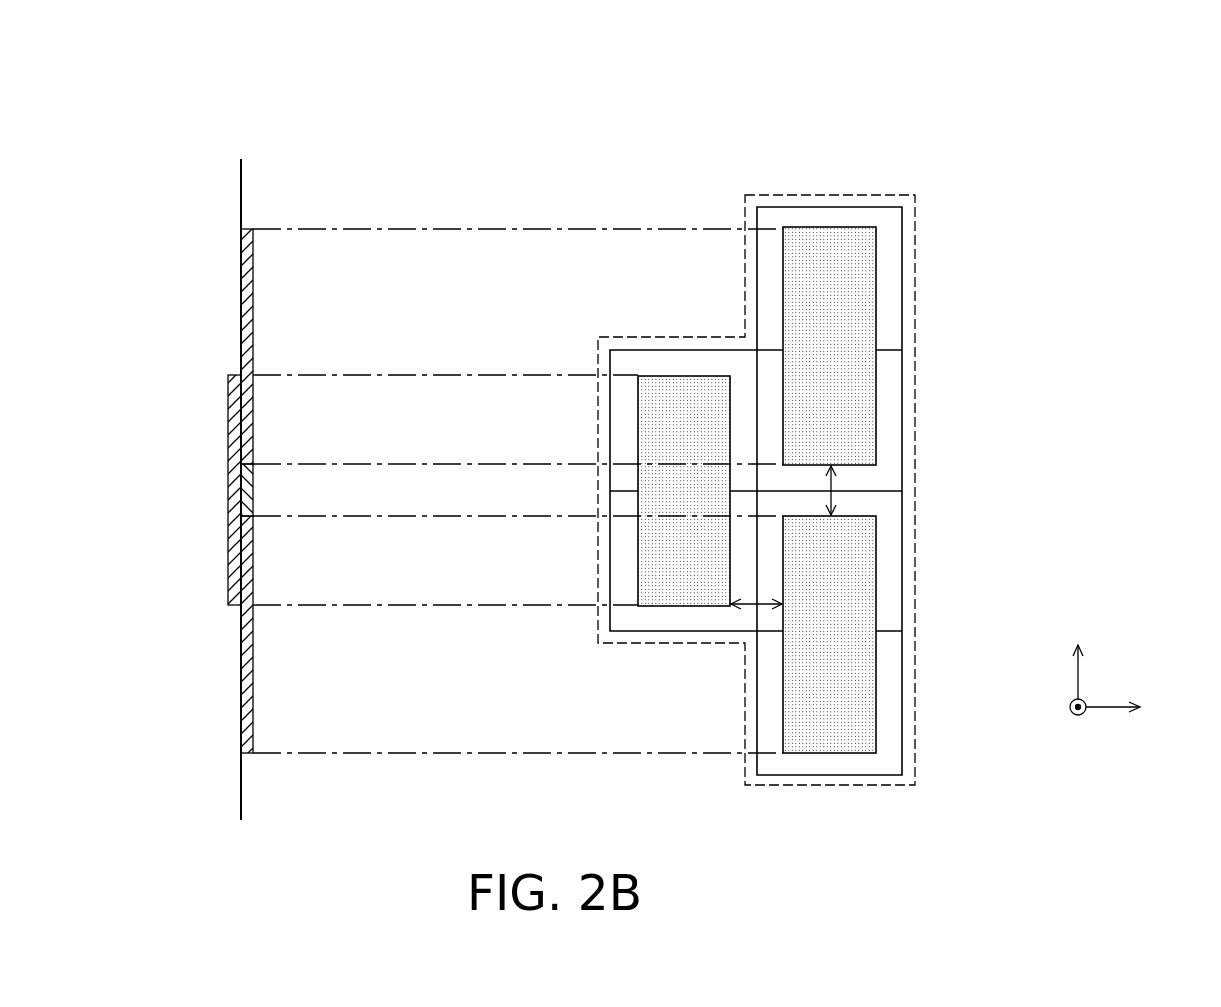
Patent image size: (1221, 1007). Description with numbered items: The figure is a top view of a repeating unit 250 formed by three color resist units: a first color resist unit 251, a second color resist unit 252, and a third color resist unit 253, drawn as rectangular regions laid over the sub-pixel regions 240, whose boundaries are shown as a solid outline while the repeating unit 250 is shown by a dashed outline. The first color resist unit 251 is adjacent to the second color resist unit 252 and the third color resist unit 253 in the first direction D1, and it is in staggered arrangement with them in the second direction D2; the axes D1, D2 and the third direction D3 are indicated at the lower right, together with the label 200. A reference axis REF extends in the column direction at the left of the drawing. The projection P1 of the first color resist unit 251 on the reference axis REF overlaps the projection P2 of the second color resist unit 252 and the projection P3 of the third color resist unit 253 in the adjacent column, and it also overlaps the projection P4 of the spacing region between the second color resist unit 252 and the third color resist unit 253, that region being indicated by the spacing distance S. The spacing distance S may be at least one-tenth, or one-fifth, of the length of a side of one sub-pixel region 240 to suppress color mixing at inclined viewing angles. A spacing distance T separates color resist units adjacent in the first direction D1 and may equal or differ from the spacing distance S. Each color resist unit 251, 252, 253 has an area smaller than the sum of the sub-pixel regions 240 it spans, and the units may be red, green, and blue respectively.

The reference axis REF is at (241, 190).
The projection of the first color resist unit P1 is at (228, 425).
The projection of the second color resist unit P2 is at (253, 310).
The projection of the third color resist unit P3 is at (253, 675).
The projection of the spacing region P4 is at (253, 490).
The sub-pixel region 240 is at (877, 207).
The repeating unit 250 is at (800, 193).
The first color resist unit 251 is at (610, 410).
The second color resist unit 252 is at (876, 288).
The third color resist unit 253 is at (876, 558).
The spacing distance S is at (832, 487).
The spacing distance T is at (762, 604).
The first direction D1 is at (1130, 707).
The second direction D2 is at (1078, 650).
The third direction D3 is at (1056, 707).
The display device 200 is at (1155, 803).